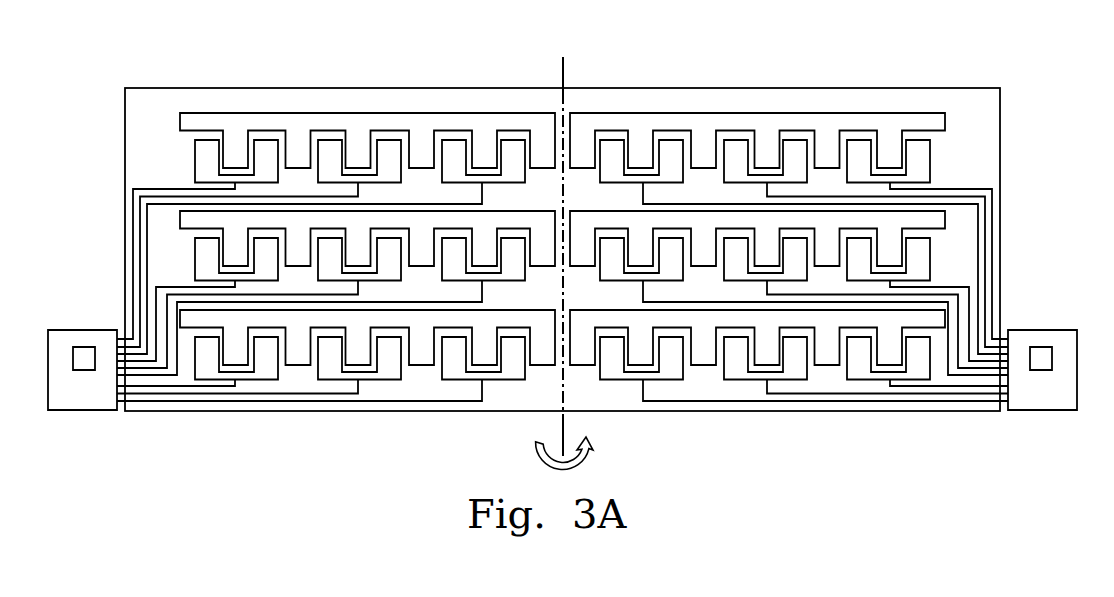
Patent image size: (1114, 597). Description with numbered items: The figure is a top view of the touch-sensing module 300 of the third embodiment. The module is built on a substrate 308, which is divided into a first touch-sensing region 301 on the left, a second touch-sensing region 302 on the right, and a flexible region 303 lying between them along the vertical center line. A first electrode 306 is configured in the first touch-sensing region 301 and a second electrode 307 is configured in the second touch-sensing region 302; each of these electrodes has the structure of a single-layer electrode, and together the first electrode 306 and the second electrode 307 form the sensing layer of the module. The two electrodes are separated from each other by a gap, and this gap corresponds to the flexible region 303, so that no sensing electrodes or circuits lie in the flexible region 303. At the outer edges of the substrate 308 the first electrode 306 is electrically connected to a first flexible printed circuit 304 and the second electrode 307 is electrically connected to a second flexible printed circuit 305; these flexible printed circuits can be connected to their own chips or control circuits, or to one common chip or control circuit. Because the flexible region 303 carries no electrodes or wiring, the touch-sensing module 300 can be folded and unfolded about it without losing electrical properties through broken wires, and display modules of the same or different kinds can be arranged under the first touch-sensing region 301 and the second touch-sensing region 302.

The touch-sensing module 300 is at (562, 261).
The first touch-sensing region 301 is at (334, 211).
The second touch-sensing region 302 is at (799, 211).
The flexible region 303 is at (570, 49).
The first flexible printed circuit 304 is at (80, 398).
The second flexible printed circuit 305 is at (1046, 398).
The first electrode 306 is at (189, 120).
The second electrode 307 is at (933, 120).
The substrate 308 is at (982, 155).